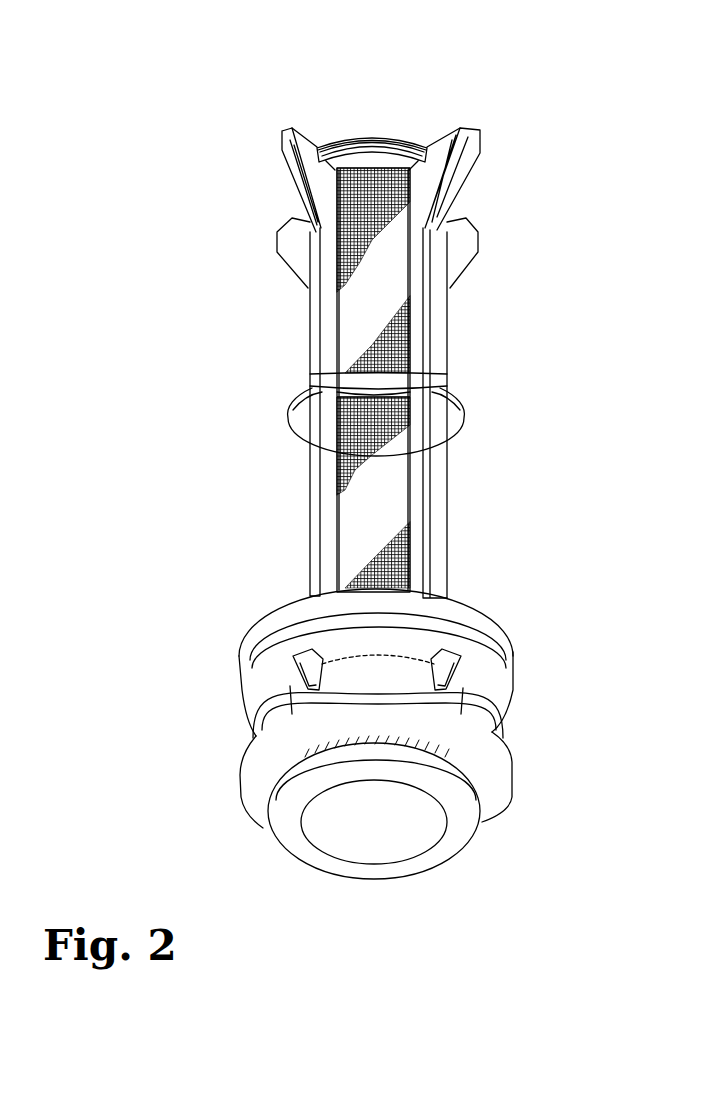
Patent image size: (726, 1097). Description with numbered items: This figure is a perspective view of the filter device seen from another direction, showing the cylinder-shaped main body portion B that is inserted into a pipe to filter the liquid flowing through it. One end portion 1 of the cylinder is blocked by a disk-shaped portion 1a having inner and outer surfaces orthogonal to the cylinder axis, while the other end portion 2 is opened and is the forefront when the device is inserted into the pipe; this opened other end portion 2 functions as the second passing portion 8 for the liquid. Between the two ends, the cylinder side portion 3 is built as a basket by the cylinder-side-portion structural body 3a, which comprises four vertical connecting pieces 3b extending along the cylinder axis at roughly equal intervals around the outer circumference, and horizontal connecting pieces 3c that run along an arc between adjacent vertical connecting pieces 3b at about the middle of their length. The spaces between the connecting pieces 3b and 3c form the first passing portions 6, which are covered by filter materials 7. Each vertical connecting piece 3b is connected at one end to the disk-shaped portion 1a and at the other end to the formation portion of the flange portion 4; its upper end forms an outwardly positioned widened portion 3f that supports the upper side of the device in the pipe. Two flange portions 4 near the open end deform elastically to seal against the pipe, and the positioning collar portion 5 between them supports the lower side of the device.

The one end portion of the cylinder 1 is at (353, 134).
The disk-shaped portion 1a is at (387, 134).
The widened portion 3f is at (282, 128).
The first passing portion 6 is at (380, 298).
The filter material 7 is at (389, 258).
The vertical connecting piece 3b is at (320, 505).
The main body portion B is at (438, 340).
The cylinder side portion 3 is at (343, 313).
The horizontal connecting piece 3c is at (334, 384).
The cylinder-side-portion structural body 3a is at (437, 398).
The flange portion 4 is at (500, 630).
The positioning collar portion 5 is at (490, 695).
The other end portion of the cylinder 2 is at (400, 853).
The second passing portion 8 is at (347, 836).